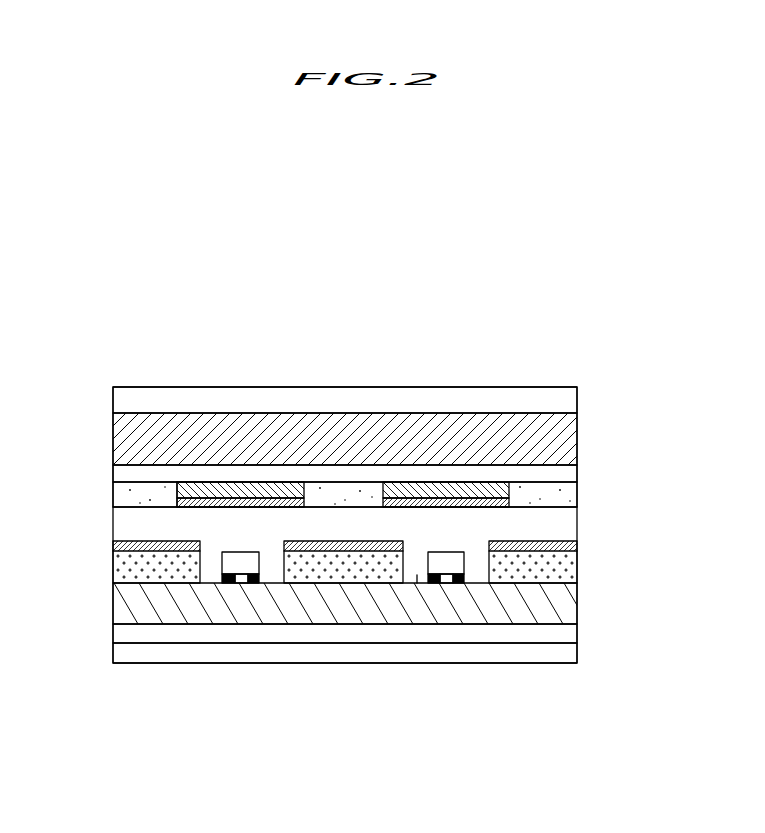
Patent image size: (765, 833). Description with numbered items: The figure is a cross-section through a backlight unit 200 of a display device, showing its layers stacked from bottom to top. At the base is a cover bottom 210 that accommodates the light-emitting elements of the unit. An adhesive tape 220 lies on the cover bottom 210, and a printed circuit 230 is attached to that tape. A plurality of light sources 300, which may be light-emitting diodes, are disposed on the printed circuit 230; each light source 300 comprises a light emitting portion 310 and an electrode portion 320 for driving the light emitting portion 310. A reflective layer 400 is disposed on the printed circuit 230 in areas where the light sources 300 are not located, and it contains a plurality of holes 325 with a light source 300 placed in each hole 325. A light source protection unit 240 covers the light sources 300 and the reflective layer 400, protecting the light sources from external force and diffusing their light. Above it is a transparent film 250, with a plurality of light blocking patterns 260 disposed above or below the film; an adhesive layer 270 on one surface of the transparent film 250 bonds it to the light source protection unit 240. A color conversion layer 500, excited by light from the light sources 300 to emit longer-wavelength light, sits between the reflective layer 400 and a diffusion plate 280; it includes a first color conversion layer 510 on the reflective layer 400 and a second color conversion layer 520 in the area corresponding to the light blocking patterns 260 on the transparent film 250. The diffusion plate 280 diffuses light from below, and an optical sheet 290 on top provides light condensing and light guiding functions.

The backlight unit 200 is at (152, 346).
The cover bottom 210 is at (577, 657).
The adhesive tape 220 is at (577, 633).
The printed circuit 230 is at (577, 606).
The light source protection unit 240 is at (113, 527).
The transparent film 250 is at (577, 474).
The light blocking pattern 260 is at (177, 495).
The adhesive layer 270 is at (113, 494).
The diffusion plate 280 is at (577, 440).
The optical sheet 290 is at (577, 401).
The light source 300 is at (365, 648).
The light emitting portion 310 is at (443, 567).
The electrode portion 320 is at (458, 582).
The hole 325 is at (417, 575).
The reflective layer 400 is at (577, 574).
The color conversion layer 500 is at (430, 519).
The first color conversion layer 510 is at (577, 545).
The second color conversion layer 520 is at (509, 500).